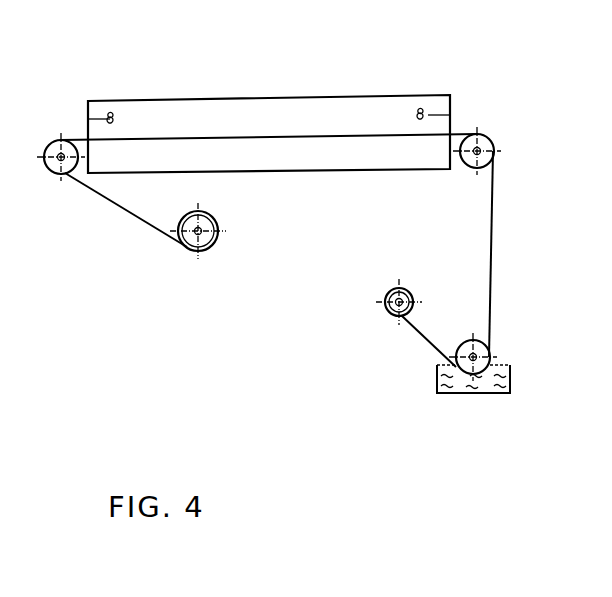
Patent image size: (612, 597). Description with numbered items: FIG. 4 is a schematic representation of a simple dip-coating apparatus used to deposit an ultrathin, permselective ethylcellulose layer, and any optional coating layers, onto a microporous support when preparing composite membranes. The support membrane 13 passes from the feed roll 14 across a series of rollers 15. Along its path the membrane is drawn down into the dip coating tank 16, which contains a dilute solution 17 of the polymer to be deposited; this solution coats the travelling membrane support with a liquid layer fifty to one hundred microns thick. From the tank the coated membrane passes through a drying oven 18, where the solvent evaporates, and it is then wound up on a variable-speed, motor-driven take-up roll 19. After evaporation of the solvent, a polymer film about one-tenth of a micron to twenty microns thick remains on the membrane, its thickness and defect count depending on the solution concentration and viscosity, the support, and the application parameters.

The support membrane 13 is at (422, 346).
The feed roll 14 is at (389, 286).
The rollers 15 is at (52, 138).
The dip coating tank 16 is at (464, 391).
The dilute solution 17 is at (502, 364).
The drying oven 18 is at (302, 112).
The take-up roll 19 is at (183, 253).